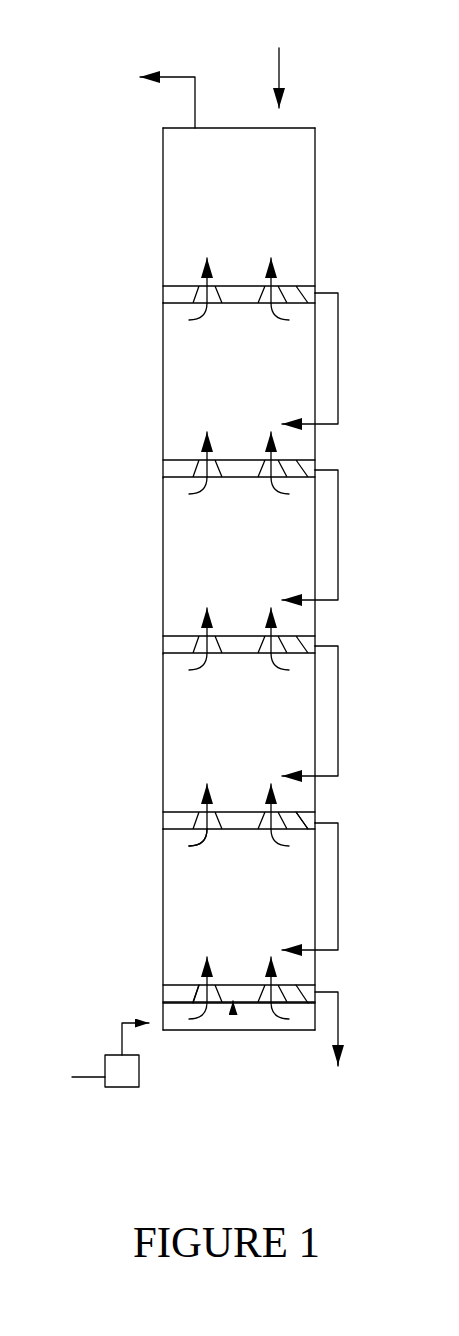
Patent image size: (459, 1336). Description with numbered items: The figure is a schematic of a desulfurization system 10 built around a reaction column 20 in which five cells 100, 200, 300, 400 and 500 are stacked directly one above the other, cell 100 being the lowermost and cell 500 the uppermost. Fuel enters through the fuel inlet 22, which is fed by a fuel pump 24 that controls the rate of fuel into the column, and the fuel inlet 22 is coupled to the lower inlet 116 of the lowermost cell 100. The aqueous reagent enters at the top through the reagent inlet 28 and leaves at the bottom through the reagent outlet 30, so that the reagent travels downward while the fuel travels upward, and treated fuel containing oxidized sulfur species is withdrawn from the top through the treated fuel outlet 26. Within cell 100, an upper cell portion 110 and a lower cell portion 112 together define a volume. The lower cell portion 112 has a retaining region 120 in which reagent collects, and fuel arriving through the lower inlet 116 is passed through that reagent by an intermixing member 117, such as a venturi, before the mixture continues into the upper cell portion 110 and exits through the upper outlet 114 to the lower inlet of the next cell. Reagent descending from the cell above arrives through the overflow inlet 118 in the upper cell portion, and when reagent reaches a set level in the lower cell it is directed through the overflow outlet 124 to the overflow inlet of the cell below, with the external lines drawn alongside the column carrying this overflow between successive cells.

The distillation system 10 is at (384, 110).
The reaction column 20 is at (384, 177).
The fuel inlet 22 is at (122, 1040).
The fuel pump 24 is at (122, 1087).
The treated fuel outlet 26 is at (167, 77).
The reagent inlet 28 is at (279, 80).
The reagent outlet 30 is at (340, 1050).
The cell 100 is at (128, 910).
The upper cell portion 110 is at (298, 838).
The lower cell portion 112 is at (300, 1000).
The upper outlet 114 is at (172, 848).
The lower inlet 116 is at (197, 995).
The intermixing member 117 is at (233, 1006).
The overflow inlet 118 is at (340, 886).
The retaining region 120 is at (197, 993).
The overflow outlet 124 is at (340, 1012).
The cell 200 is at (128, 727).
The cell 300 is at (128, 552).
The cell 400 is at (128, 380).
The cell 500 is at (128, 207).